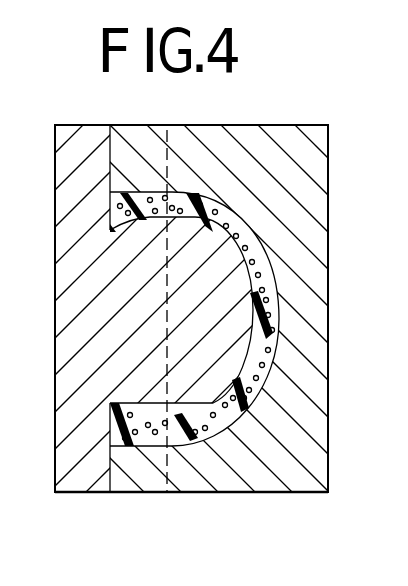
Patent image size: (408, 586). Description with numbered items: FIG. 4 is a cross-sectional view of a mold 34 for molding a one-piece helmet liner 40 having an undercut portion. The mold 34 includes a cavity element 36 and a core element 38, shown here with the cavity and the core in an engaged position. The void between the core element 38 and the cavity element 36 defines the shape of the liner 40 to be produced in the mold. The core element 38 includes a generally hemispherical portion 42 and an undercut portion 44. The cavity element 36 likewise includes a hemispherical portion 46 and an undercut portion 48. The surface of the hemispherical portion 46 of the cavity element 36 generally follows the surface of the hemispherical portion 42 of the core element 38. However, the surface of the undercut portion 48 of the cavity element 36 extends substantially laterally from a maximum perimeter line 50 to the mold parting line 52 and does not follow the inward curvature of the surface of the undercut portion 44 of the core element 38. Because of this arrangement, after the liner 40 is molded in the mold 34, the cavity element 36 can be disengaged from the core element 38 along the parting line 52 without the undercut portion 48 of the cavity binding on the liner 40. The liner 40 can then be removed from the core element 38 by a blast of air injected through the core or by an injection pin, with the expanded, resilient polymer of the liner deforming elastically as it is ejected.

The mold 34 is at (270, 108).
The cavity element 36 is at (300, 219).
The core element 38 is at (160, 243).
The liner 40 is at (175, 207).
The hemispherical portion 42 is at (203, 363).
The undercut portion 44 is at (140, 387).
The hemispherical portion 46 is at (285, 463).
The undercut portion 48 is at (153, 472).
The maximum perimeter line 50 is at (168, 313).
The mold parting line 52 is at (110, 450).